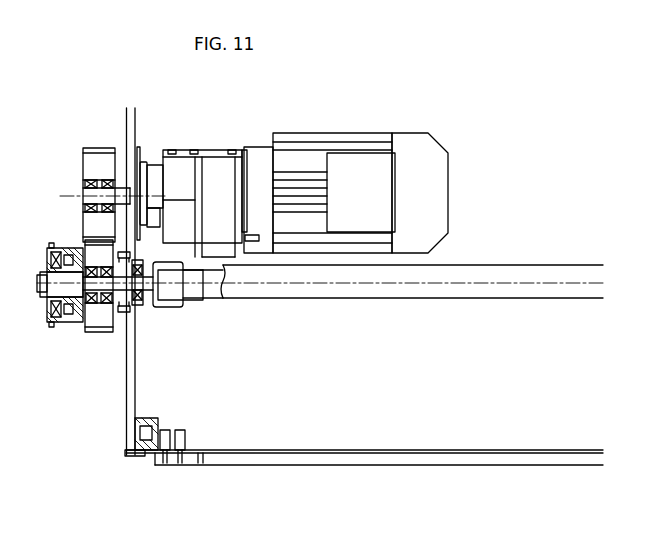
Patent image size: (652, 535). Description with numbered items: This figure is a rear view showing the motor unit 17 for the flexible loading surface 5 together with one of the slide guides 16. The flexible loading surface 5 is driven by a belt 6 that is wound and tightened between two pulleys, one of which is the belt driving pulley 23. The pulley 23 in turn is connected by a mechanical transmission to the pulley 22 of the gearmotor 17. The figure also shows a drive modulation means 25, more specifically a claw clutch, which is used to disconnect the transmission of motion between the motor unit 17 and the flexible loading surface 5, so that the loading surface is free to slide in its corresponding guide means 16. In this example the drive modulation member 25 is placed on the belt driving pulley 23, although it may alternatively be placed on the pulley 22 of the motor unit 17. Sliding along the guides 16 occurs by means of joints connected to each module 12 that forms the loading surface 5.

The flexible loading surface 5 is at (437, 436).
The belt 6 is at (137, 335).
The module 12 is at (262, 468).
The slide guide 16 is at (148, 418).
The motor unit 17 is at (266, 148).
The pulley of the gearmotor 22 is at (98, 148).
The belt driving pulley 23 is at (100, 332).
The drive modulation means 25 is at (60, 236).